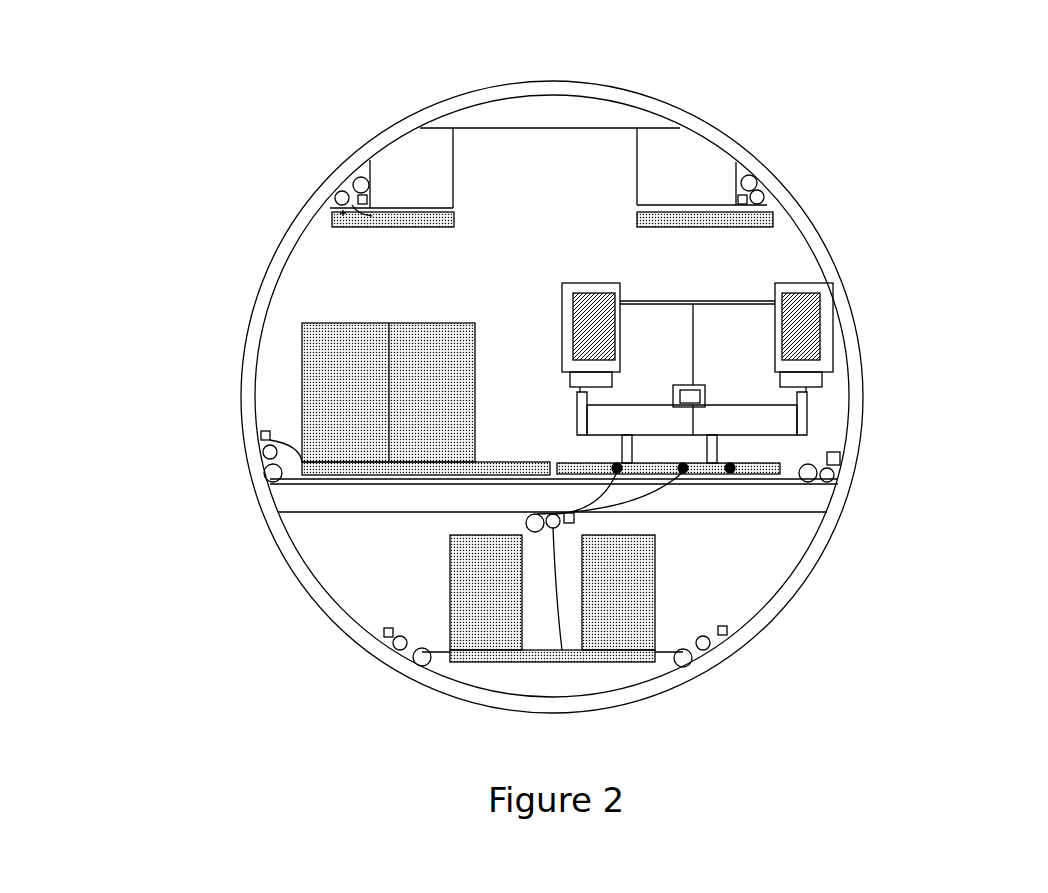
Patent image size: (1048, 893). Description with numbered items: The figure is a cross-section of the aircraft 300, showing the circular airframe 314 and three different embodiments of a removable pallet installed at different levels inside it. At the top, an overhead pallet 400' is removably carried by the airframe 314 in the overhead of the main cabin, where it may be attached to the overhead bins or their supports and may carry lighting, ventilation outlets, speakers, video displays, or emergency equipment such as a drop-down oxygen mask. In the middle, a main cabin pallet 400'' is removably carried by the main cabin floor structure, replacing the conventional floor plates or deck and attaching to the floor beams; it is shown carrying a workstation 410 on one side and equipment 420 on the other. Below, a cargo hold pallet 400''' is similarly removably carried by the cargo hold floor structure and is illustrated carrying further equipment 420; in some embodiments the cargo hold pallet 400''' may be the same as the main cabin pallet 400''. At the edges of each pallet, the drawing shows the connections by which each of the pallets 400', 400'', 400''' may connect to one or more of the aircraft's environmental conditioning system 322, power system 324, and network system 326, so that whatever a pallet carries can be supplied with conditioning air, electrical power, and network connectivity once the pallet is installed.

The aircraft 300 is at (910, 147).
The airframe 314 is at (862, 360).
The environmental conditioning (EC) system 322 is at (352, 183).
The power system 324 is at (336, 197).
The network system 326 is at (737, 197).
The overhead pallet 400' is at (551, 196).
The main cabin pallet 400'' is at (554, 508).
The cargo hold pallet 400''' is at (534, 696).
The workstation 410 is at (754, 363).
The equipment 420 is at (452, 388).